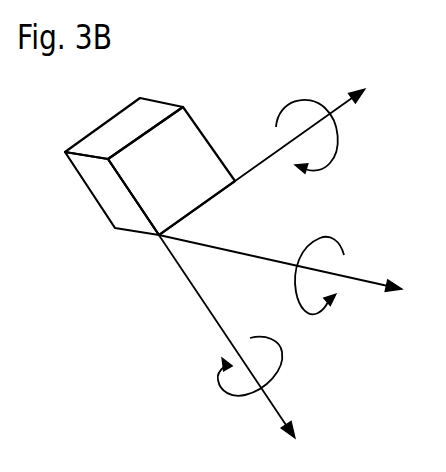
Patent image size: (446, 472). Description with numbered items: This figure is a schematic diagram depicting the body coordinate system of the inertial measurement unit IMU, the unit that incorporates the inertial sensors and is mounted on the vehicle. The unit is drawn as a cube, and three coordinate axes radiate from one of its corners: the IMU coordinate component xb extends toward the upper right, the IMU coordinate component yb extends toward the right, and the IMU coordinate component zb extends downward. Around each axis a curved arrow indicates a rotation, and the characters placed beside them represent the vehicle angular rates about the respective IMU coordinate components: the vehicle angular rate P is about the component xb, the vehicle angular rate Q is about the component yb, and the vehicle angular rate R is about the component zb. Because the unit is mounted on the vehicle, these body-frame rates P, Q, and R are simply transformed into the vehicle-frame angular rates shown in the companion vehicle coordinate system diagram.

The inertial measurement unit IMU is at (150, 166).
The IMU coordinate component x_b xb is at (267, 150).
The IMU coordinate component y_b yb is at (281, 263).
The IMU coordinate component z_b zb is at (201, 298).
The vehicle angular rate about x_b P is at (307, 124).
The vehicle angular rate about y_b Q is at (319, 265).
The vehicle angular rate about z_b R is at (233, 366).